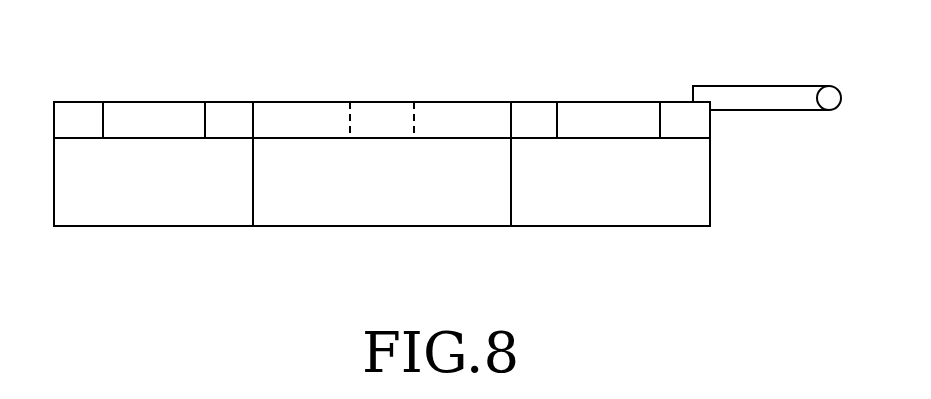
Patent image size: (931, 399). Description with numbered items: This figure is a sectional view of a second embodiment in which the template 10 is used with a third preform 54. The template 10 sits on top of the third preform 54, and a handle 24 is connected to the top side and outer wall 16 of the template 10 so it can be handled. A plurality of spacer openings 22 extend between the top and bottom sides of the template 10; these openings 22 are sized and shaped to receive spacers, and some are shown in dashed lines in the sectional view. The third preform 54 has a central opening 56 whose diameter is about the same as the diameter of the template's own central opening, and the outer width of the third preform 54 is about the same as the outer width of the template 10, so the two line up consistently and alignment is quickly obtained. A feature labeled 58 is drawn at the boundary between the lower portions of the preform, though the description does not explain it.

The template 10 is at (75, 101).
The outer wall 16 is at (713, 125).
The spacer openings 22 is at (185, 112).
The handle 24 is at (790, 86).
The third preform 54 is at (676, 207).
The central opening 56 is at (436, 210).
The hinge joint 58 is at (253, 195).